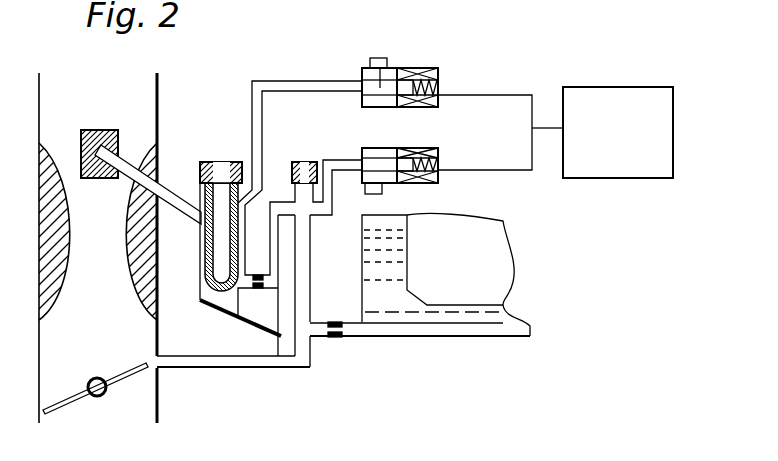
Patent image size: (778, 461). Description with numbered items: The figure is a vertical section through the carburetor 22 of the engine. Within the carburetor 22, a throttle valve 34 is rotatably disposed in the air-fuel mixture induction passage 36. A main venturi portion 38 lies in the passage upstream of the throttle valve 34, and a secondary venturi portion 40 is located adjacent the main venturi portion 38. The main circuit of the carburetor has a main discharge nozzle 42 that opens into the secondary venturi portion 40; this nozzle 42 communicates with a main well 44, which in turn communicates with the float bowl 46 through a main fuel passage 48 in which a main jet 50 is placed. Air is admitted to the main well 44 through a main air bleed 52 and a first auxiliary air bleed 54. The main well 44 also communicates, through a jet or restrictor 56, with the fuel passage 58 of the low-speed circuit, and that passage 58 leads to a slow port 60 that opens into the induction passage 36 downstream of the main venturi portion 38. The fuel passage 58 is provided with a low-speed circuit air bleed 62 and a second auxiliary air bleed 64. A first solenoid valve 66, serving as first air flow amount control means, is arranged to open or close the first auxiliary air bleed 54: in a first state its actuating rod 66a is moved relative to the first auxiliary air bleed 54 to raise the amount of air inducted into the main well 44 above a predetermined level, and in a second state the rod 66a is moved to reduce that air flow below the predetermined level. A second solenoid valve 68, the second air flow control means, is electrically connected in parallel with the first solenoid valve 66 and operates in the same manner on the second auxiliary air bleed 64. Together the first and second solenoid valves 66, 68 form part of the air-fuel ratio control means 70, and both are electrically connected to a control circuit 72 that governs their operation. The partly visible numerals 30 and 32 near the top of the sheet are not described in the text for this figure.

The carburetor 22 is at (165, 111).
The housing 30 is at (377, 6).
The cover 32 is at (551, 10).
The throttle valve 34 is at (114, 383).
The air-fuel mixture induction passage 36 is at (82, 349).
The main venturi portion 38 is at (72, 238).
The secondary venturi portion 40 is at (98, 130).
The main discharge nozzle 42 is at (127, 163).
The main well 44 is at (222, 300).
The float bowl 46 is at (437, 325).
The main fuel passage 48 is at (265, 326).
The main jet 50 is at (336, 338).
The main air bleed 52 is at (222, 162).
The first auxiliary air bleed 54 is at (362, 77).
The restrictor 56 is at (256, 290).
The fuel passage 58 is at (305, 255).
The slow port 60 is at (160, 365).
The low-speed circuit air bleed 62 is at (307, 162).
The second auxiliary air bleed 64 is at (350, 178).
The first solenoid valve 66 is at (440, 68).
The actuating rod 66a is at (382, 88).
The second solenoid valve 68 is at (420, 148).
The air-fuel ratio control means 70 is at (529, 86).
The control circuit 72 is at (612, 179).